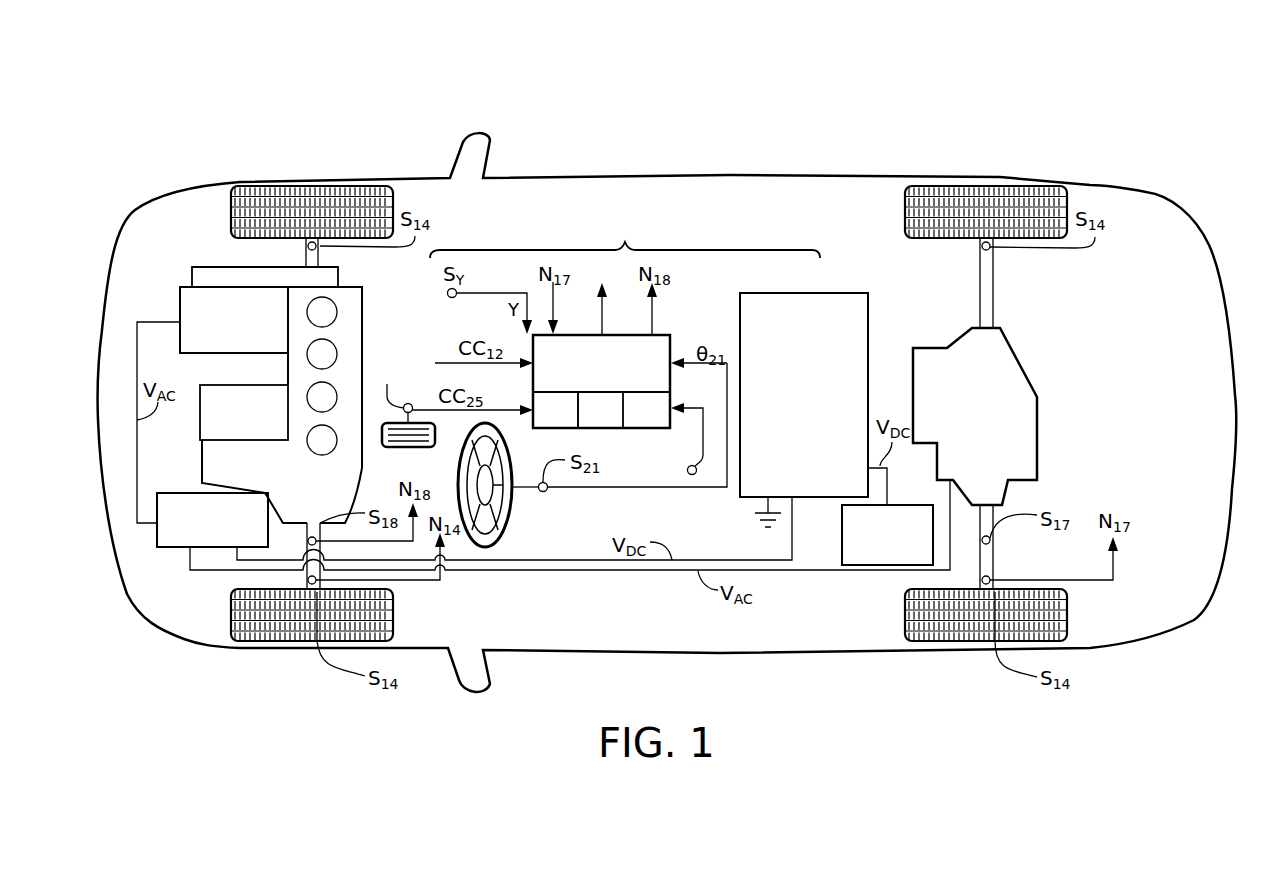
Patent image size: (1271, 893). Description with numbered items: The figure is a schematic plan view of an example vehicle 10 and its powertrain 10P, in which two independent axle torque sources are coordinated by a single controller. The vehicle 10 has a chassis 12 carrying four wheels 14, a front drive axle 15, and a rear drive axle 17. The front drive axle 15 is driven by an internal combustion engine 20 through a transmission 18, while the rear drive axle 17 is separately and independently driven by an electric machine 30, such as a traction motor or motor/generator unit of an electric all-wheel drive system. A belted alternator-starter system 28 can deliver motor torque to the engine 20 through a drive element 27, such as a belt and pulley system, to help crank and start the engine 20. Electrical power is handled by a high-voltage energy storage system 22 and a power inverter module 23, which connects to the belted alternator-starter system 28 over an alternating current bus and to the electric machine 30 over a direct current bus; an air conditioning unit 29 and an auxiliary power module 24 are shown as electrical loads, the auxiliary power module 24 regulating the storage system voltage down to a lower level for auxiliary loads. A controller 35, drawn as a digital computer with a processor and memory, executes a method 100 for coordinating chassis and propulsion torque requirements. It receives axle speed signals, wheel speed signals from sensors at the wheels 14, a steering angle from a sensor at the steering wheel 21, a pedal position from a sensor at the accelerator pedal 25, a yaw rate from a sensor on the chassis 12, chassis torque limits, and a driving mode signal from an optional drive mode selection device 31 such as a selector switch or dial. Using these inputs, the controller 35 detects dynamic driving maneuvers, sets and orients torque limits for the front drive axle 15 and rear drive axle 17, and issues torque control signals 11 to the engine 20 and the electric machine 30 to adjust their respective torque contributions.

The vehicle 10 is at (1003, 75).
The chassis 12 is at (693, 176).
The wheels 14 is at (312, 186).
The front drive axle 15 is at (320, 255).
The rear drive axle 17 is at (980, 253).
The transmission 18 is at (282, 471).
The internal combustion engine 20 is at (363, 345).
The steering wheel 21 is at (508, 520).
The energy storage system 22 is at (804, 410).
The power inverter module 23 is at (193, 493).
The auxiliary power module 24 is at (887, 535).
The accelerator pedal 25 is at (397, 447).
The drive element 27 is at (218, 267).
The belted alternator-starter system 28 is at (180, 307).
The air conditioning unit 29 is at (255, 385).
The electric machine 30 is at (975, 416).
The drive mode selection device 31 is at (688, 466).
The controller 35 is at (672, 342).
The torque control signals 11 is at (603, 318).
The method 100 is at (555, 410).
The powertrain 10P is at (625, 236).